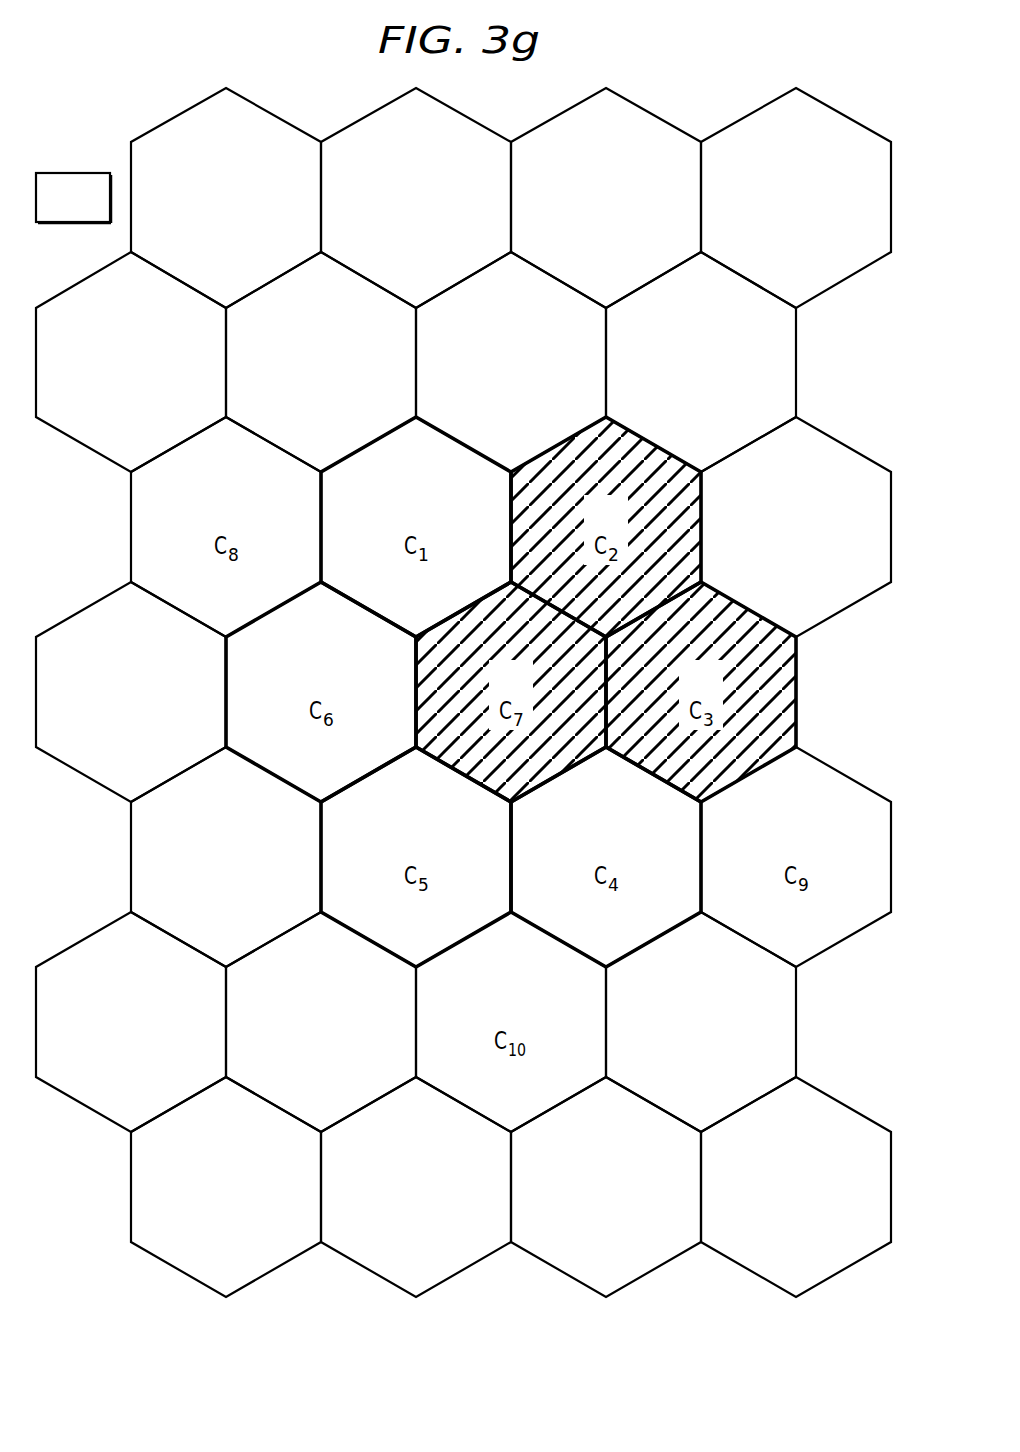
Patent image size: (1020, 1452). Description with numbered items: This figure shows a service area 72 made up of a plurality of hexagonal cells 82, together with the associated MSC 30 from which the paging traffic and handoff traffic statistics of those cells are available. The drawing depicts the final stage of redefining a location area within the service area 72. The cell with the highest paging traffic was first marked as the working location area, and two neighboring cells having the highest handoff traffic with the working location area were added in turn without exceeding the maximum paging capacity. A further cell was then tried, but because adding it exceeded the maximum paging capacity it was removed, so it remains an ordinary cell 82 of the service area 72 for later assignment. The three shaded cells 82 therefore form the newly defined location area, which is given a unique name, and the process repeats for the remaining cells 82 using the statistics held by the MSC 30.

The MSC 30 is at (70, 173).
The service area 72 is at (696, 68).
The cell 82 is at (212, 209).